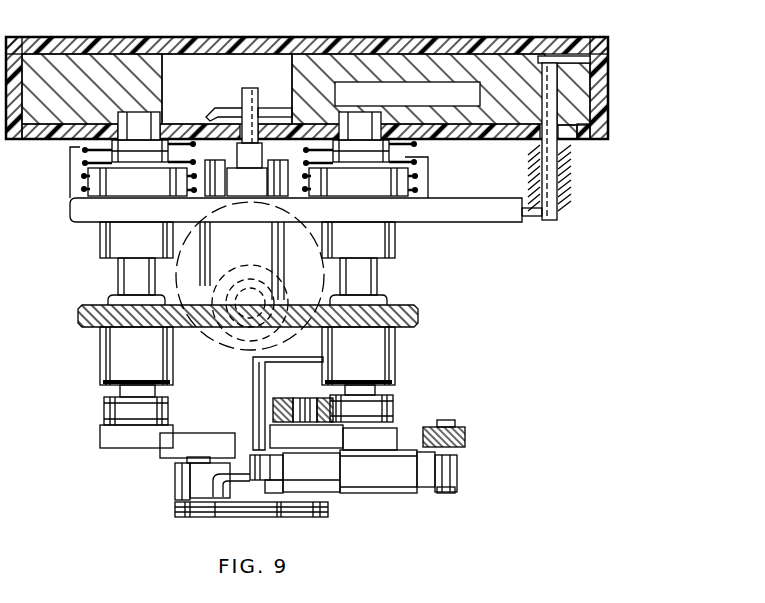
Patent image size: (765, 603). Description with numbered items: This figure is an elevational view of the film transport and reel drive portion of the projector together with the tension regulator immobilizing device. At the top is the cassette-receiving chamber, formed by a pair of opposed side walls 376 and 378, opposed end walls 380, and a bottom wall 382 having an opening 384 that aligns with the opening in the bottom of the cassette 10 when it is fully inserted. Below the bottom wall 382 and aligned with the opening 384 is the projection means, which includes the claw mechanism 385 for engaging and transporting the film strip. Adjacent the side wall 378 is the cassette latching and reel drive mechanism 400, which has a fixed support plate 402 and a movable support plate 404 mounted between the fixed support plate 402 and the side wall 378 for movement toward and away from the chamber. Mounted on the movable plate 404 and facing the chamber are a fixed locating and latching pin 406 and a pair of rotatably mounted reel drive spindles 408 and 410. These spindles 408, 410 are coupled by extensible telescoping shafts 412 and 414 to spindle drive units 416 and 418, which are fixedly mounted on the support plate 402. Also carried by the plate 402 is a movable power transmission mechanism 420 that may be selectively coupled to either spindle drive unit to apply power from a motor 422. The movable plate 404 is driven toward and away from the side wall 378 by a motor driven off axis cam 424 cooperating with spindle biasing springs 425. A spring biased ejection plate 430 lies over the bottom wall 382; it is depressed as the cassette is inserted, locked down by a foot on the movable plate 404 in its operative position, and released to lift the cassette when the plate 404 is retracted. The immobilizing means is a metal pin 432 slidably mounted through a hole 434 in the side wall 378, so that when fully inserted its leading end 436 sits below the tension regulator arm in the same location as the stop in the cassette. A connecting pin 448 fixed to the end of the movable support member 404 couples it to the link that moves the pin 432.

The cassette 10 is at (608, 62).
The side wall 376 is at (525, 47).
The side wall 378 is at (515, 139).
The end wall 380 is at (602, 106).
The bottom wall 382 is at (92, 62).
The opening 384 is at (187, 65).
The claw mechanism 385 is at (231, 108).
The cassette latching and reel drive mechanism 400 is at (493, 368).
The fixed support plate 402 is at (420, 312).
The movable support plate 404 is at (458, 216).
The locating and latching pin 406 is at (248, 88).
The reel drive spindle 408 is at (380, 92).
The reel drive spindle 410 is at (152, 114).
The extensible telescoping shaft 412 is at (383, 282).
The extensible telescoping shaft 414 is at (118, 276).
The spindle drive unit 416 is at (396, 358).
The spindle drive unit 418 is at (100, 358).
The movable power transmission mechanism 420 is at (497, 464).
The motor 422 is at (253, 403).
The off axis cam 424 is at (268, 256).
The spindle biasing spring 425 is at (70, 147).
The spring biased ejection plate 430 is at (476, 99).
The metal pin 432 is at (549, 182).
The hole 434 is at (575, 139).
The leading end 436 is at (591, 67).
The connecting pin 448 is at (531, 218).